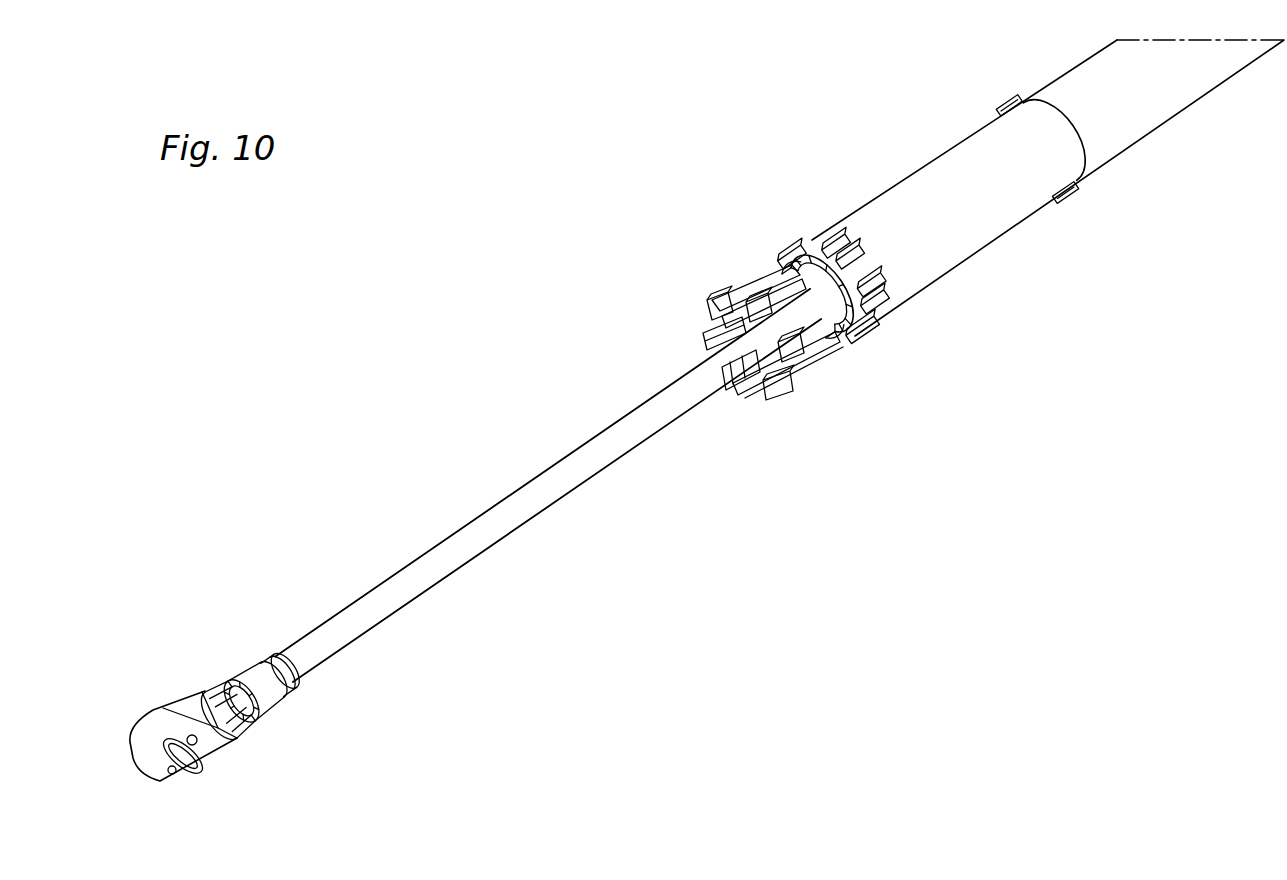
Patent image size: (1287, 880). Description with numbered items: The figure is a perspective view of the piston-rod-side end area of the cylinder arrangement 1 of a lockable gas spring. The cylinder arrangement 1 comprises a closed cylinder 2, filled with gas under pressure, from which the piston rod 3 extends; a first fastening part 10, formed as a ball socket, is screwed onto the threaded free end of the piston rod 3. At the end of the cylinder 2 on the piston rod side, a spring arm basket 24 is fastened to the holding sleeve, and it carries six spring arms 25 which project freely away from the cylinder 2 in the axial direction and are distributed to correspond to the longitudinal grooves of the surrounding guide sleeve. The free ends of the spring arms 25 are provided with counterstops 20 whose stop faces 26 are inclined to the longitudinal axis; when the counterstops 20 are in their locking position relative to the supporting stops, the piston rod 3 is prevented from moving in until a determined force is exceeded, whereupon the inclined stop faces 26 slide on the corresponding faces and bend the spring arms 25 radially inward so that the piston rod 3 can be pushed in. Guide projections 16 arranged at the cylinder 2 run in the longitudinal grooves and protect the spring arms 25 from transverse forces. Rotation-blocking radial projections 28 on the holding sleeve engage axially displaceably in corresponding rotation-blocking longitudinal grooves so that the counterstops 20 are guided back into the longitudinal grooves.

The cylinder arrangement 1 is at (563, 243).
The cylinder 2 is at (1148, 110).
The piston rod 3 is at (487, 537).
The first fastening part 10 is at (163, 725).
The guide projections 16 is at (790, 262).
The counterstops 20 is at (715, 270).
The spring arm basket 24 is at (837, 367).
The spring arms 25 is at (745, 270).
The stop faces 26 is at (707, 305).
The rotation-blocking radial projections 28 is at (1000, 100).